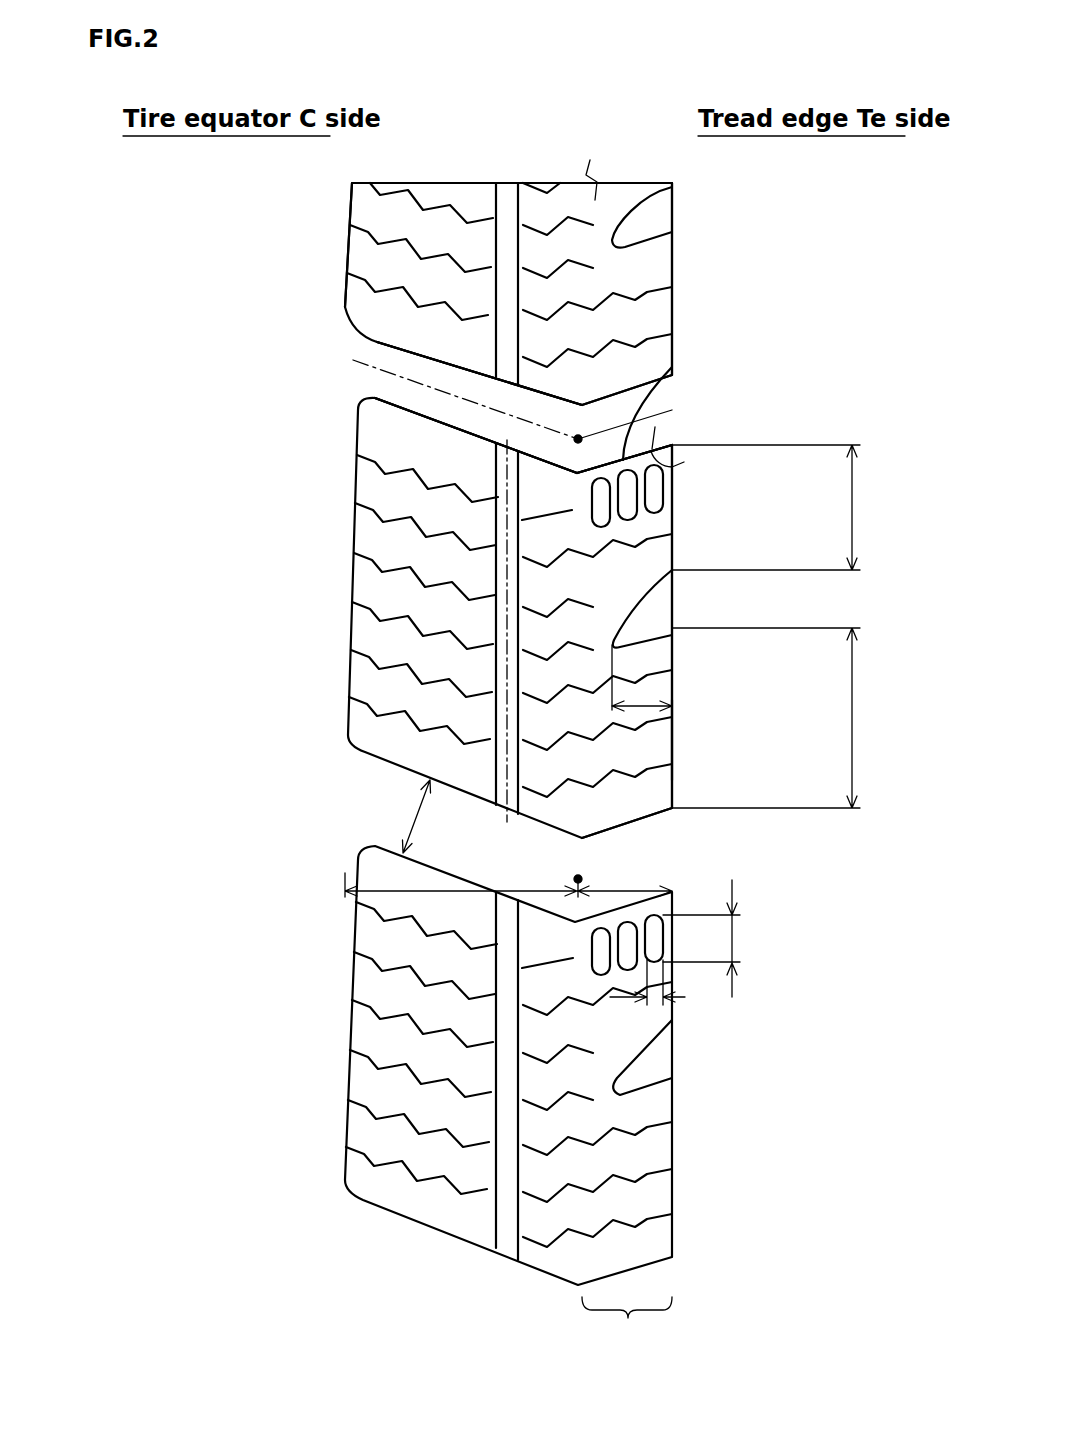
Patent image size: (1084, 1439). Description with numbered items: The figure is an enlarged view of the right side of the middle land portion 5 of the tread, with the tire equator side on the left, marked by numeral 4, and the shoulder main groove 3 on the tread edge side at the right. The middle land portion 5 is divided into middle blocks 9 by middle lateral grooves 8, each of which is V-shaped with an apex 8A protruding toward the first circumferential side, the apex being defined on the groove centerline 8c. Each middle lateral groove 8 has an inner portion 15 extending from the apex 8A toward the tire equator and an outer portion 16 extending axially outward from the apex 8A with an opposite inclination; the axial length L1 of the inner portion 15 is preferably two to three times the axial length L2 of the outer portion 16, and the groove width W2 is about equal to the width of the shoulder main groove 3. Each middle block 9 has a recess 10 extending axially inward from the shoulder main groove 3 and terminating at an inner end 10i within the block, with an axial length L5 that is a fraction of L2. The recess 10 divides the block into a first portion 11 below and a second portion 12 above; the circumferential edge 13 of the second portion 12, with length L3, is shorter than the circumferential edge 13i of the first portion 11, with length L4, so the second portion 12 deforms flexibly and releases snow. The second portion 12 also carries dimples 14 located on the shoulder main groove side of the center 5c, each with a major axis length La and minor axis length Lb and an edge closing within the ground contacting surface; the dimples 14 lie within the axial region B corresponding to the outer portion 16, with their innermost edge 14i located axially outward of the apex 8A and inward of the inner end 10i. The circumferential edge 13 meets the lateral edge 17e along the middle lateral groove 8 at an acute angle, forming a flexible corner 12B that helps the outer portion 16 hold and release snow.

The shoulder main groove 3 is at (710, 212).
The crown main groove 4 is at (330, 212).
The middle land portion 5 is at (381, 534).
The center of the middle land portion 5c is at (507, 668).
The middle lateral groove 8 is at (260, 228).
The apex 8A is at (578, 439).
The groove centerline 8c is at (372, 368).
The middle block 9 is at (401, 1098).
The recess 10 is at (661, 615).
The inner end of the recess 10i is at (605, 638).
The first portion 11 is at (593, 799).
The second portion 12 is at (533, 499).
The corner 12B is at (692, 435).
The circumferential edge 13 is at (673, 548).
The circumferential edge of the first portion 13i is at (673, 738).
The dimple 14 is at (600, 975).
The innermost edge of the dimple 14i is at (590, 963).
The inner portion 15 is at (395, 363).
The outer portion 16 is at (623, 410).
The lateral edge 17e is at (673, 377).
The length of the inner portion L1 is at (417, 889).
The length of the outer portion L2 is at (623, 890).
The length of the circumferential edge of the second portion L3 is at (781, 507).
The length of the circumferential edge of the first portion L4 is at (781, 718).
The length of the recess L5 is at (662, 693).
The length of the dimple in the major axis direction La is at (716, 938).
The length of the dimple in the minor axis direction Lb is at (657, 998).
The width of the middle lateral groove W2 is at (415, 818).
The axial region B is at (627, 1324).